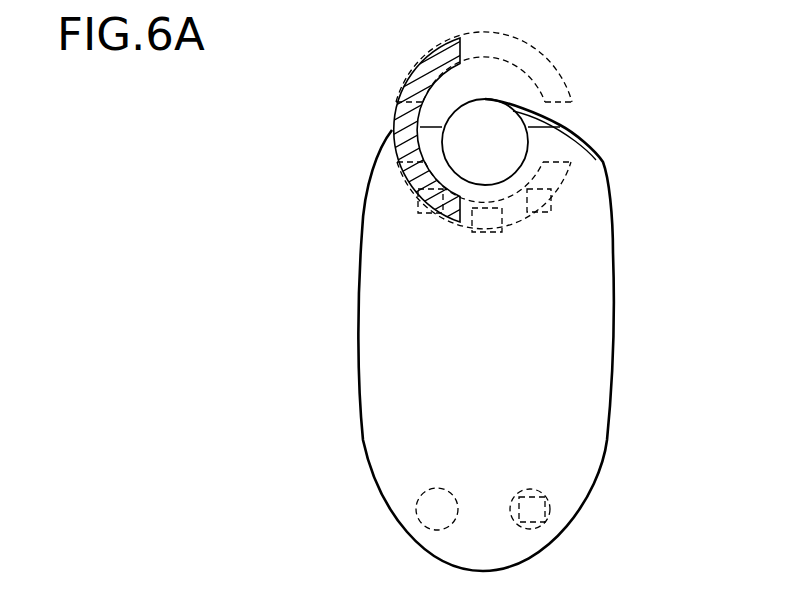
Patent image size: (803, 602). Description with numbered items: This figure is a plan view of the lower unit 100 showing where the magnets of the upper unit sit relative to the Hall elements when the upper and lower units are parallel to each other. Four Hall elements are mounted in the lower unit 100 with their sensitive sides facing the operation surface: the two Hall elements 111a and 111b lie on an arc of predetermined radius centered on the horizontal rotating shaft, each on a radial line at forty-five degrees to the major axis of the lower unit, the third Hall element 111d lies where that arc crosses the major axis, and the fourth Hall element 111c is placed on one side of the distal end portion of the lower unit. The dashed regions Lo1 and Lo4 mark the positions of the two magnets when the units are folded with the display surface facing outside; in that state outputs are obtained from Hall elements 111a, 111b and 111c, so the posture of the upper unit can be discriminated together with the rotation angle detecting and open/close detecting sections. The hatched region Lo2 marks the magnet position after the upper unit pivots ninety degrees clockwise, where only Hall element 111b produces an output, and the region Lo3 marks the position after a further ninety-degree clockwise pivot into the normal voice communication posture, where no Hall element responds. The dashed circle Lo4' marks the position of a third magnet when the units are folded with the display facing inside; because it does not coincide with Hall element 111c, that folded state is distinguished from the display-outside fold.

The lower unit 100 is at (349, 425).
The position of the magnet Lo2 is at (392, 128).
The position of the magnet Lo3 is at (560, 58).
The position of the magnet Lo1 is at (543, 223).
The Hall element 111a is at (552, 195).
The Hall element 111b is at (420, 210).
The Hall element 111c is at (543, 508).
The Hall element 111d is at (483, 233).
The position of the magnet Lo4 is at (581, 528).
The position of the magnet Lo4' is at (385, 527).